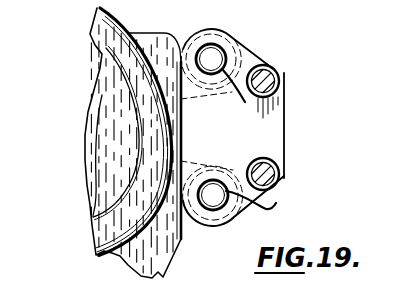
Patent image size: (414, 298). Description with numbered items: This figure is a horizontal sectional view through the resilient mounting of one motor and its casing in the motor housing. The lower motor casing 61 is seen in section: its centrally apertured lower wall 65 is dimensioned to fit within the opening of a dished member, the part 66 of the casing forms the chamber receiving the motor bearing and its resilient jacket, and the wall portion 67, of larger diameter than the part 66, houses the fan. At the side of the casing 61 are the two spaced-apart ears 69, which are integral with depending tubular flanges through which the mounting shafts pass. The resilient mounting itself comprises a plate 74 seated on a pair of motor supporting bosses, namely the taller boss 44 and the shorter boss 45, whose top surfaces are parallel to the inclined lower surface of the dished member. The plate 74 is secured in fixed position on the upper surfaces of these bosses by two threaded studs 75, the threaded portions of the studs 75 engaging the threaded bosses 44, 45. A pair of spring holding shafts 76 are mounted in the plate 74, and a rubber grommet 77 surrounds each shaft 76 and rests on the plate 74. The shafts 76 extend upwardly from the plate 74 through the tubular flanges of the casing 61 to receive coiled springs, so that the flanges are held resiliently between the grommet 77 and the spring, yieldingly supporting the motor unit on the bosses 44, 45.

The lower motor casing 61 is at (147, 247).
The centrally apertured lower wall 65 is at (92, 143).
The part of the casing forming bearing chamber 66 is at (100, 196).
The wall portion 67 is at (112, 30).
The ears 69 is at (195, 11).
The plate 74 is at (268, 135).
The threaded studs 75 is at (278, 79).
The spring holding shafts 76 is at (213, 113).
The rubber grommet 77 is at (227, 46).
The taller boss 44 is at (276, 203).
The shorter boss 45 is at (268, 64).